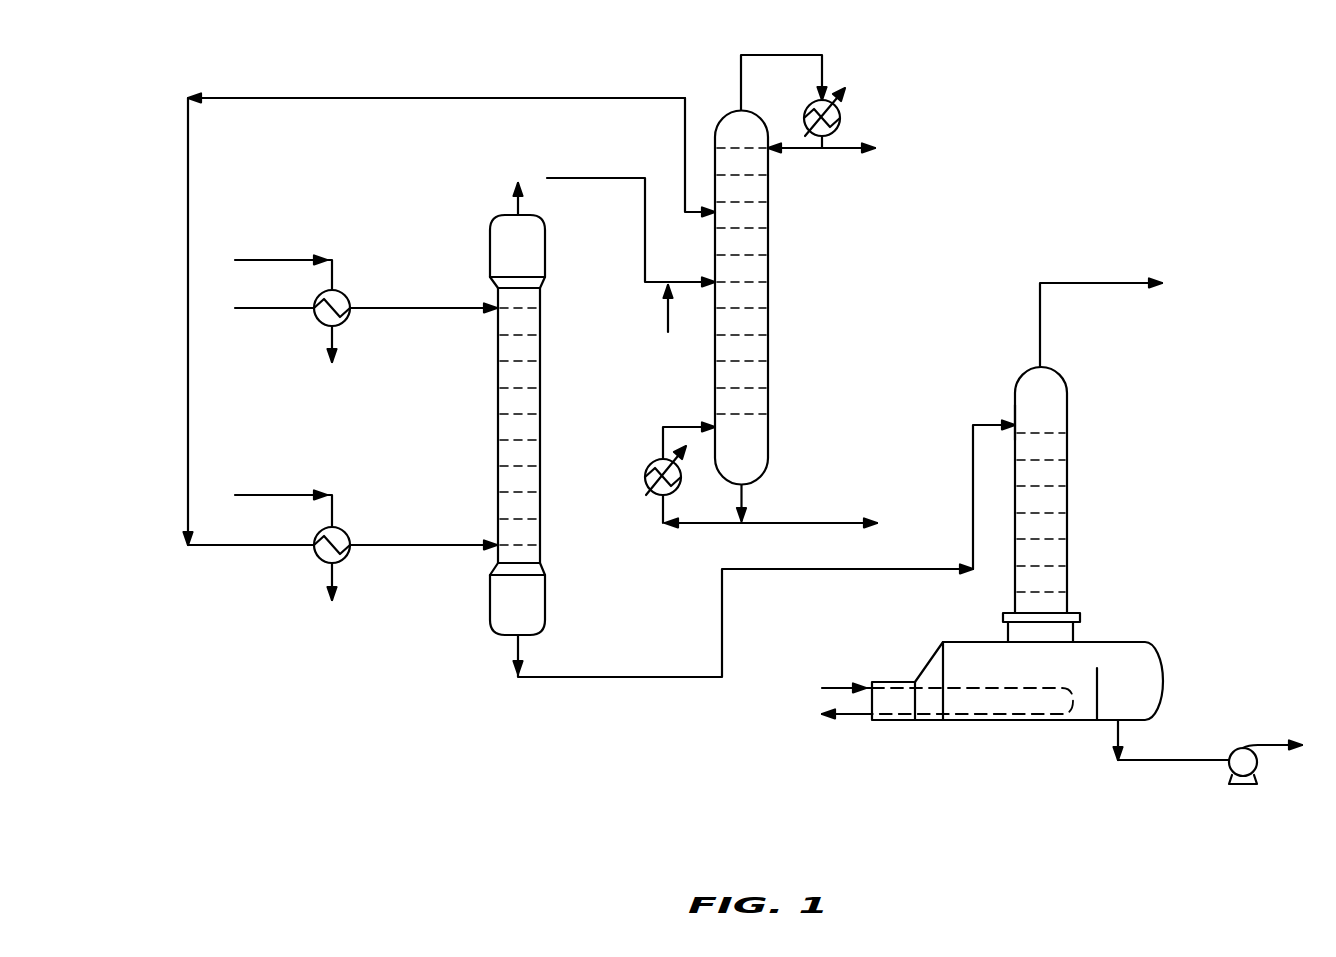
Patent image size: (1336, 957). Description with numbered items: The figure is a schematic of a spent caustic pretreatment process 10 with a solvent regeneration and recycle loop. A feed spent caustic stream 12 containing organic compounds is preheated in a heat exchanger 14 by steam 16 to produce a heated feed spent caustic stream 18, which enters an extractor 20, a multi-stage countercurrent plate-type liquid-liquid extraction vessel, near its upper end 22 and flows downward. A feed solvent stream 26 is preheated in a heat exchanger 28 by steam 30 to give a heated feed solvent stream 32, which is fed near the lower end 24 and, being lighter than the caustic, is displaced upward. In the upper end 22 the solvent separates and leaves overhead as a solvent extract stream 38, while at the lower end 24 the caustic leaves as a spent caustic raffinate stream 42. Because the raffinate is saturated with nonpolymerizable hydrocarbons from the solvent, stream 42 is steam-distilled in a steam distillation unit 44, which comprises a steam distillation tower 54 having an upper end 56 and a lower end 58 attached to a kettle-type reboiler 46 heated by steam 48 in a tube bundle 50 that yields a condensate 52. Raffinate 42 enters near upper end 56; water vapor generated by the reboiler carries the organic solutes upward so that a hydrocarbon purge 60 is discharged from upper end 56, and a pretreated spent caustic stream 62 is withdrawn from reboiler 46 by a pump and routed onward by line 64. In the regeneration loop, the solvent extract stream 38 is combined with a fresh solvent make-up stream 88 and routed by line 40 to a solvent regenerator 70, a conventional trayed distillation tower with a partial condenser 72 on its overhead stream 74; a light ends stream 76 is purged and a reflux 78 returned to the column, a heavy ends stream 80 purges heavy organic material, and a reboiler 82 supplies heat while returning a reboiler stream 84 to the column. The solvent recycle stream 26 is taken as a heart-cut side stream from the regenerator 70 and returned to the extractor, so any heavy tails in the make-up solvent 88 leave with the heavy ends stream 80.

The spent caustic pretreatment process 10 is at (1208, 256).
The feed spent caustic stream 12 is at (272, 330).
The heat exchanger 14 is at (347, 300).
The steam 16 is at (268, 258).
The heated feed spent caustic stream 18 is at (398, 330).
The extractor 20 is at (545, 399).
The upper end 22 is at (489, 236).
The lower end 24 is at (548, 597).
The feed solvent stream 26 is at (497, 96).
The heat exchanger 28 is at (348, 536).
The steam 30 is at (268, 493).
The heated feed solvent stream 32 is at (428, 562).
The solvent extract stream 38 is at (548, 177).
The line 40 is at (690, 280).
The spent caustic raffinate stream 42 is at (598, 690).
The steam distillation unit 44 is at (1068, 502).
The kettle-type reboiler 46 is at (1152, 652).
The steam 48 is at (838, 685).
The tube bundle 50 is at (1015, 718).
The condensate 52 is at (850, 718).
The steam distillation tower 54 is at (1068, 421).
The upper end 56 is at (1055, 368).
The lower end 58 is at (1068, 587).
The hydrocarbon purge 60 is at (1038, 310).
The pretreated spent caustic stream 62 is at (1172, 765).
The line 64 is at (1272, 748).
The solvent regenerator 70 is at (770, 348).
The partial condenser 72 is at (842, 110).
The overhead stream 74 is at (738, 84).
The light ends stream 76 is at (840, 152).
The reflux 78 is at (808, 152).
The heavy ends stream 80 is at (812, 521).
The reboiler 82 is at (645, 480).
The reboiler stream 84 is at (661, 438).
The fresh solvent make-up stream 88 is at (666, 320).